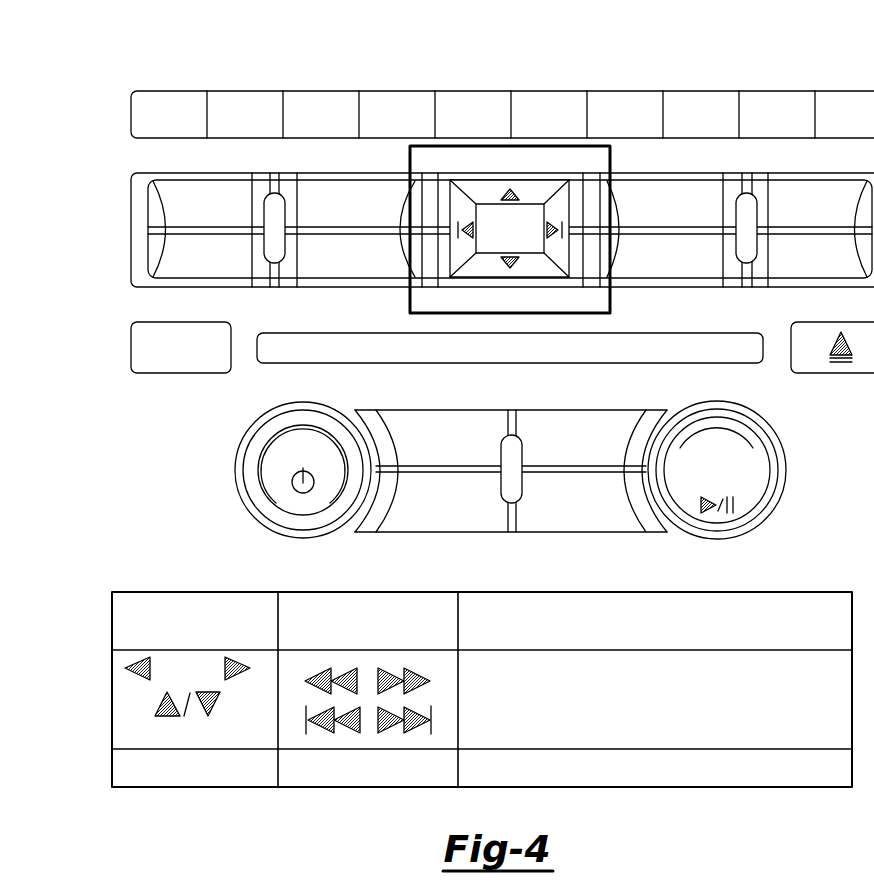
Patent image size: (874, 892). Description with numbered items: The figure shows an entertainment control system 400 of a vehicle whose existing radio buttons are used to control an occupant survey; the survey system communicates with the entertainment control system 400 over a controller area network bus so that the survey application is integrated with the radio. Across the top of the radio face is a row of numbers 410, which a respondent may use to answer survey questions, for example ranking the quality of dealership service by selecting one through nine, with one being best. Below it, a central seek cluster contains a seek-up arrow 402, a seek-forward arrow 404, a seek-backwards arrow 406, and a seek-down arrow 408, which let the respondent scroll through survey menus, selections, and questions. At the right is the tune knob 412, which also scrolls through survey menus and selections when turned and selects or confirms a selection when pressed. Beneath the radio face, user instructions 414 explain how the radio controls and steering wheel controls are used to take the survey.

The entertainment control system 400 is at (196, 35).
The seek-up arrow 402 is at (480, 191).
The seek-forward arrow 404 is at (563, 247).
The seek-backwards arrow 406 is at (458, 247).
The seek-down arrow 408 is at (522, 268).
The row of numbers 410 is at (485, 91).
The tune knob 412 is at (757, 473).
The user instructions 414 is at (200, 787).